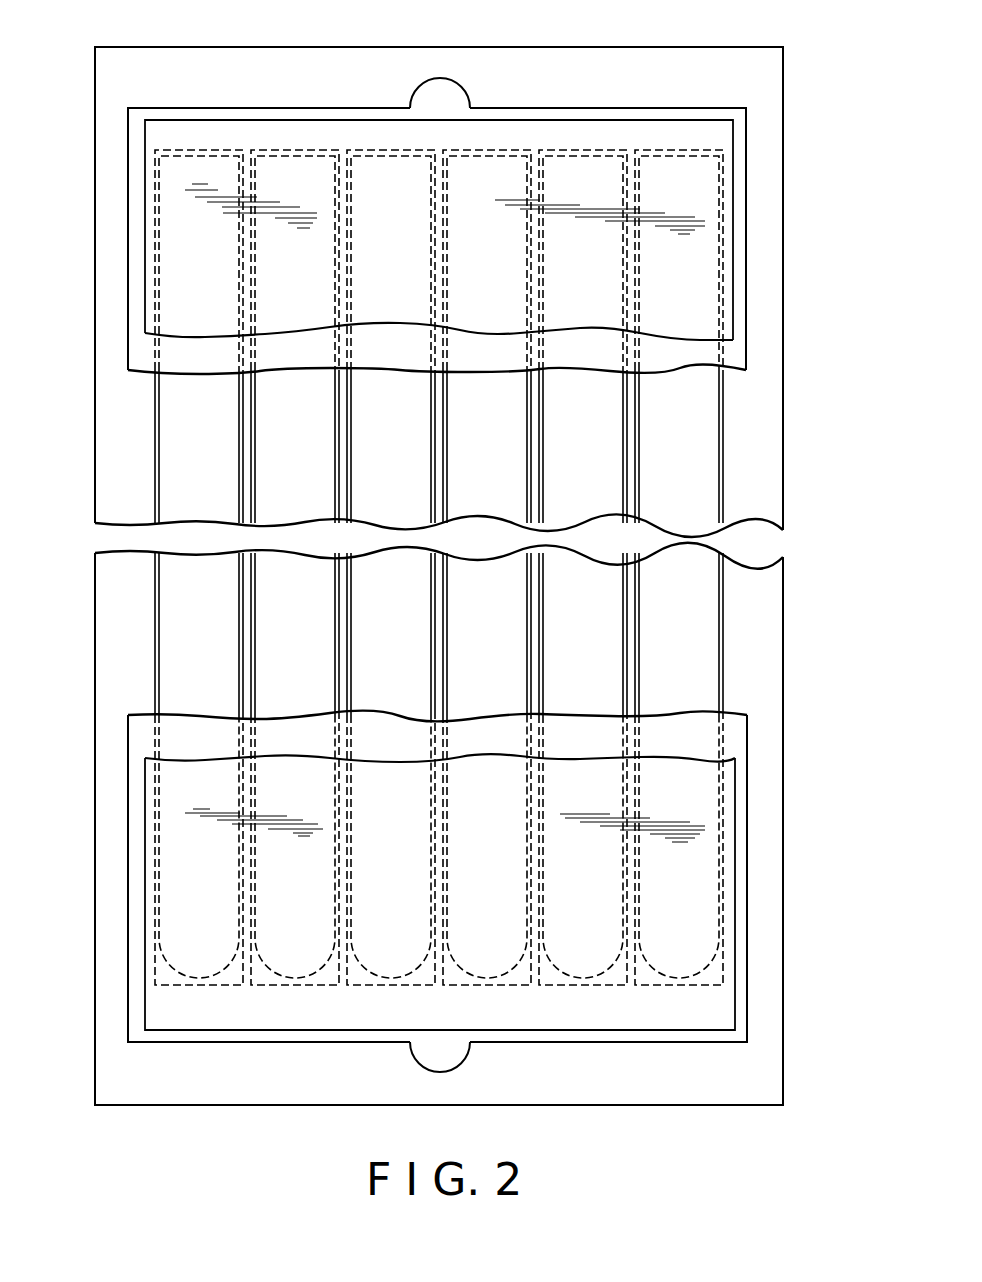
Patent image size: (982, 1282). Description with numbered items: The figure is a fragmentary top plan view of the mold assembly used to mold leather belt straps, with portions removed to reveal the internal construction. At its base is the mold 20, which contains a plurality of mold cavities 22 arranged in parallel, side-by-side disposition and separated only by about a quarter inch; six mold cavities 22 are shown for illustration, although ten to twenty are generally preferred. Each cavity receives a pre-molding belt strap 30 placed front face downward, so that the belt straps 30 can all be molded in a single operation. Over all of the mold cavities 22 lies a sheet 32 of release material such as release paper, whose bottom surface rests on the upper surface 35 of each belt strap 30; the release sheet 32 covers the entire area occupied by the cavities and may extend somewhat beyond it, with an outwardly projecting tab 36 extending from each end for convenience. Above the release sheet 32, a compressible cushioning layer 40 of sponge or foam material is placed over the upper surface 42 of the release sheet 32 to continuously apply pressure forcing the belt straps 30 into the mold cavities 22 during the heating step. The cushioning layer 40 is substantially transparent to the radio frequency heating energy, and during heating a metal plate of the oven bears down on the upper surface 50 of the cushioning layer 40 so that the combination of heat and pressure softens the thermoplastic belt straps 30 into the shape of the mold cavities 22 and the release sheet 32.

The mold 20 is at (756, 320).
The mold cavities 22 is at (663, 148).
The belt straps 30 is at (702, 418).
The release sheet 32 is at (738, 253).
The upper surface of belt strap 35 is at (168, 470).
The tab 36 is at (442, 94).
The cushioning layer 40 is at (697, 185).
The upper surface of release sheet 42 is at (140, 353).
The upper surface of cushioning layer 50 is at (173, 266).